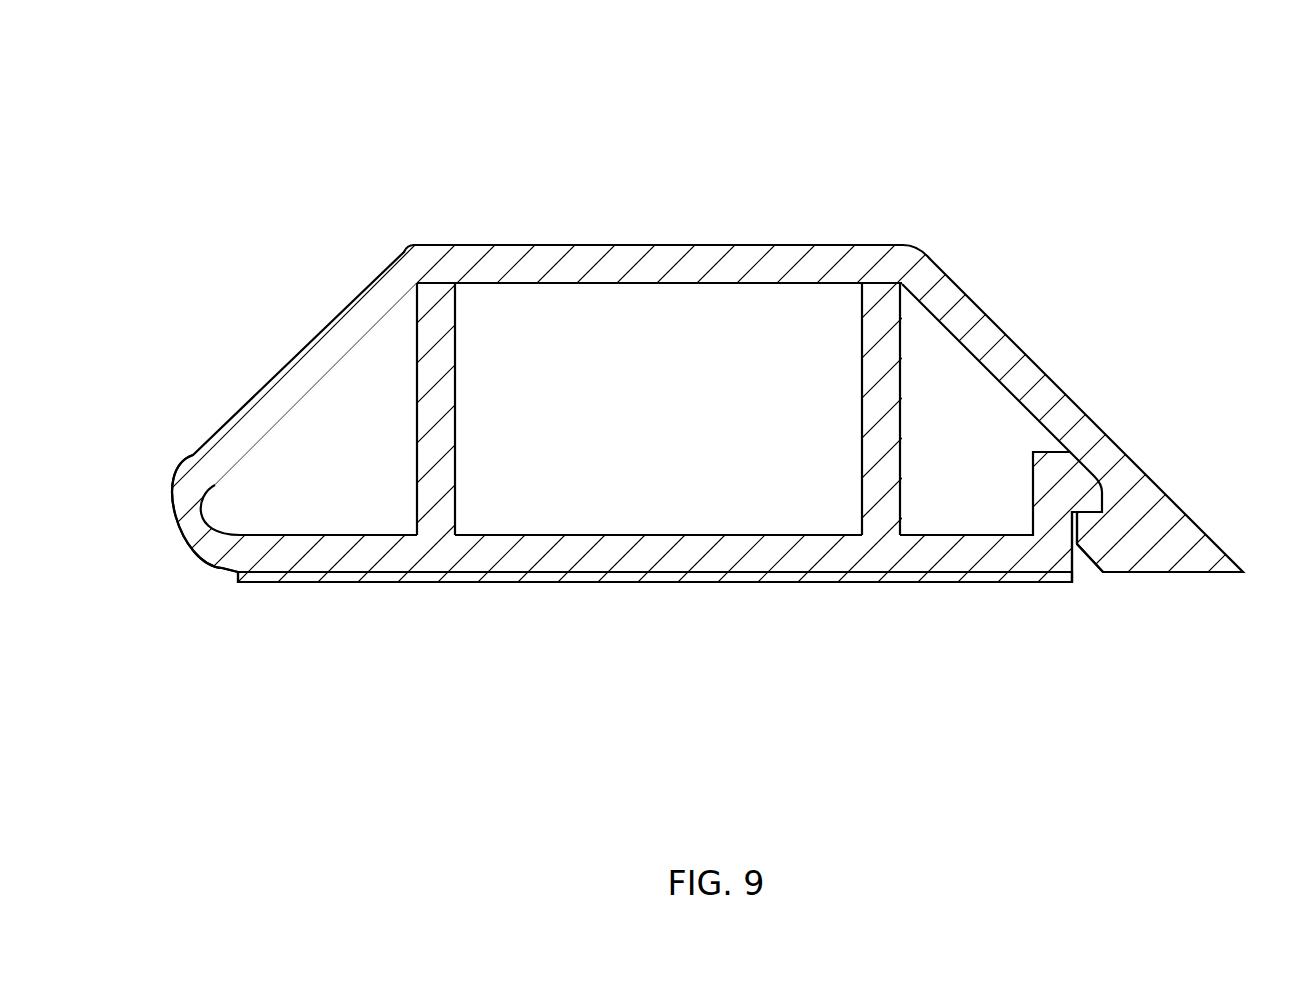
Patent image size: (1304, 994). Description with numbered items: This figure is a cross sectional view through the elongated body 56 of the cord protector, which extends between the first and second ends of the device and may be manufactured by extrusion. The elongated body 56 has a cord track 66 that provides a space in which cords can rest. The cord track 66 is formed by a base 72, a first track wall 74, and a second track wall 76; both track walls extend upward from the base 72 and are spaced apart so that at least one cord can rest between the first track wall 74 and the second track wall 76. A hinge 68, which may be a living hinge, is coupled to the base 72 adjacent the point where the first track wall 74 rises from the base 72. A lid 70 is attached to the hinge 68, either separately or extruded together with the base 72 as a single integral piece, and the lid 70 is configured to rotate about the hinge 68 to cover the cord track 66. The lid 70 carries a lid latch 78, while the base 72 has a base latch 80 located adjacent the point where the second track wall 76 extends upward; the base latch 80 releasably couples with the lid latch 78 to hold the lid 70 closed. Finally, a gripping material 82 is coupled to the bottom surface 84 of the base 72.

The elongated body 56 is at (340, 190).
The cord track 66 is at (747, 420).
The hinge 68 is at (183, 520).
The lid 70 is at (930, 297).
The base 72 is at (612, 558).
The first track wall 74 is at (435, 442).
The second track wall 76 is at (878, 410).
The lid latch 78 is at (1092, 534).
The base latch 80 is at (1084, 497).
The gripping material 82 is at (802, 578).
The bottom surface 84 is at (388, 572).